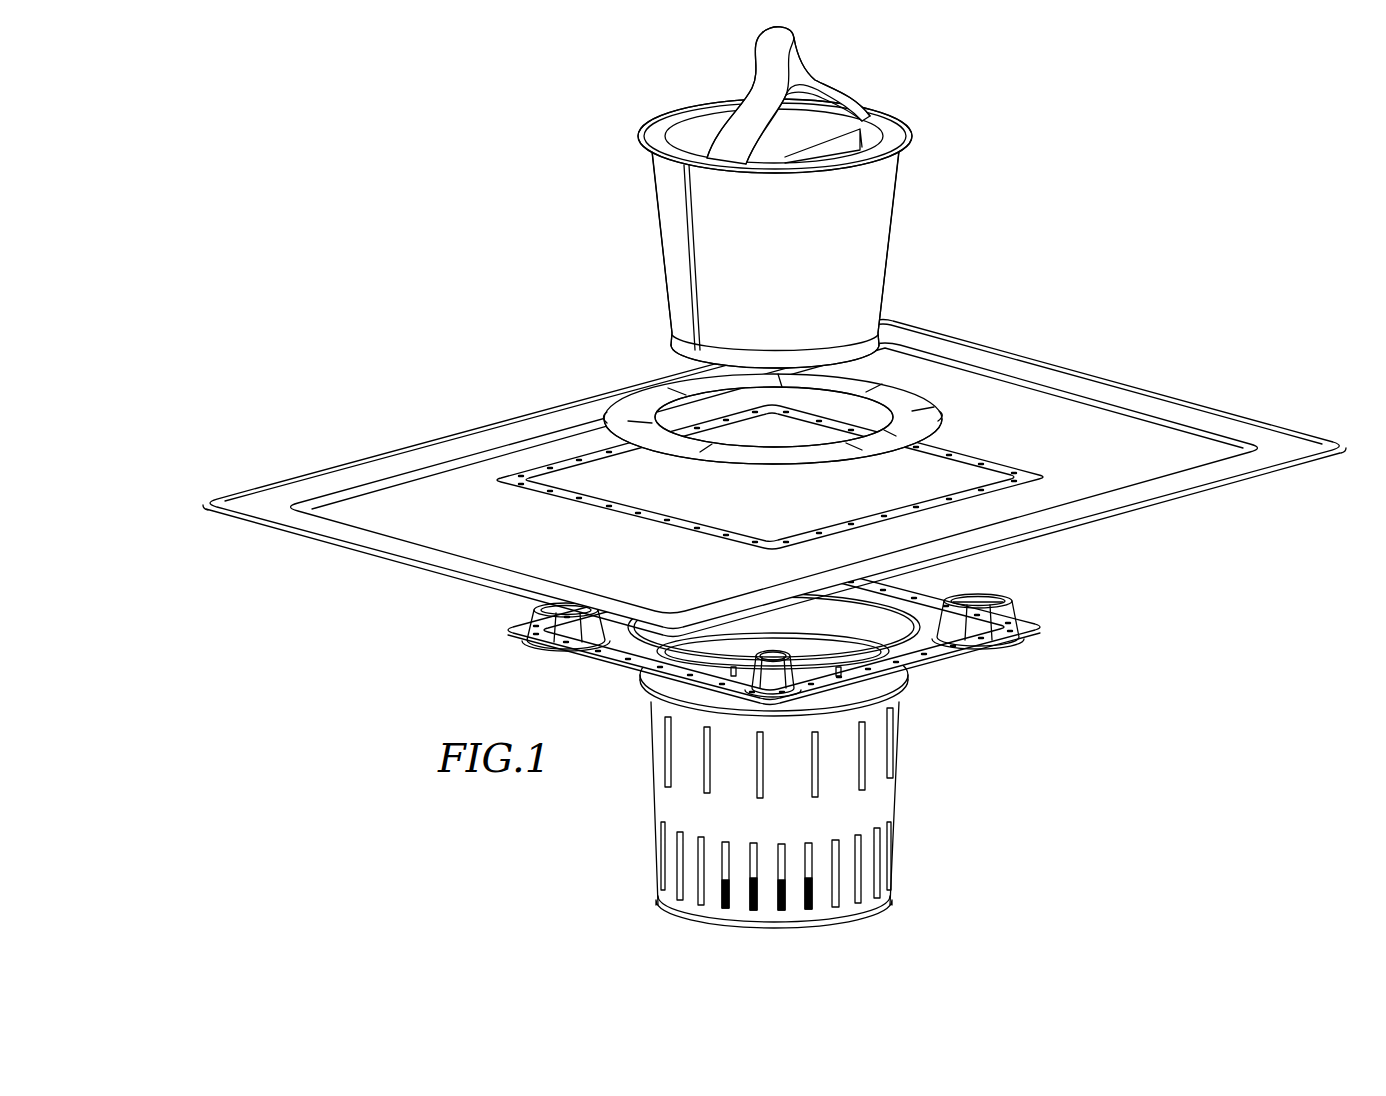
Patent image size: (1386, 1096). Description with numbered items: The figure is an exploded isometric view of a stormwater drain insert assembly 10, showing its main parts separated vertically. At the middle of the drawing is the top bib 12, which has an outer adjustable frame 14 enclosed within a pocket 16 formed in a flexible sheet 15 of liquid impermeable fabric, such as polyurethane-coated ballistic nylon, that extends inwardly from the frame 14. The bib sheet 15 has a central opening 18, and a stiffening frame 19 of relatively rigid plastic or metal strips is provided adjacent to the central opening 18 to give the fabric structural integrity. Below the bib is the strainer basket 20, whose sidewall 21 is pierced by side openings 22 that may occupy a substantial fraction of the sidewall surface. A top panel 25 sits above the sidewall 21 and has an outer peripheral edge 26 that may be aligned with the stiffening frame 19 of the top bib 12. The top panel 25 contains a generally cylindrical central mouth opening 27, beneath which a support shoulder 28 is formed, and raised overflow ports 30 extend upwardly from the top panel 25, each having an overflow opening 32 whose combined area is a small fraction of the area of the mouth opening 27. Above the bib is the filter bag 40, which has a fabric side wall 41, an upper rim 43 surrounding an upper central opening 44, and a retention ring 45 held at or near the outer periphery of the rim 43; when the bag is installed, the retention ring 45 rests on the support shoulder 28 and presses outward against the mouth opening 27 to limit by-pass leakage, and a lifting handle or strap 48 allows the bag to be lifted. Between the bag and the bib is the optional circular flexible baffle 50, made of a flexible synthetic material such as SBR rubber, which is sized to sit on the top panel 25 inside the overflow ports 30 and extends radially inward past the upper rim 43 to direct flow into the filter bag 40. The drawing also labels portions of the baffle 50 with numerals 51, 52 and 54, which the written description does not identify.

The stormwater drain insert assembly 10 is at (472, 215).
The top bib 12 is at (761, 478).
The outer adjustable frame 14 is at (222, 500).
The flexible sheet of material 15 is at (470, 465).
The pocket 16 is at (272, 495).
The central opening 18 is at (602, 462).
The stiffening frame 19 is at (590, 506).
The strainer basket 20 is at (792, 783).
The sidewall 21 is at (673, 800).
The side openings 22 is at (668, 740).
The top panel 25 is at (773, 623).
The outer peripheral edge 26 is at (1040, 633).
The central mouth opening 27 is at (856, 624).
The support shoulder 28 is at (820, 648).
The raised overflow ports 30 is at (525, 622).
The overflow opening 32 is at (980, 603).
The filter bag 40 is at (811, 190).
The side wall 41 is at (866, 262).
The upper rim 43 is at (888, 139).
The upper central opening 44 is at (893, 118).
The retention ring 45 is at (910, 128).
The lifting handle or strap 48 is at (766, 46).
The circular flexible baffle 50 is at (809, 443).
The gasket outer edge 51 is at (845, 460).
The gasket inner opening 52 is at (780, 437).
The gasket tabs 54 is at (737, 458).